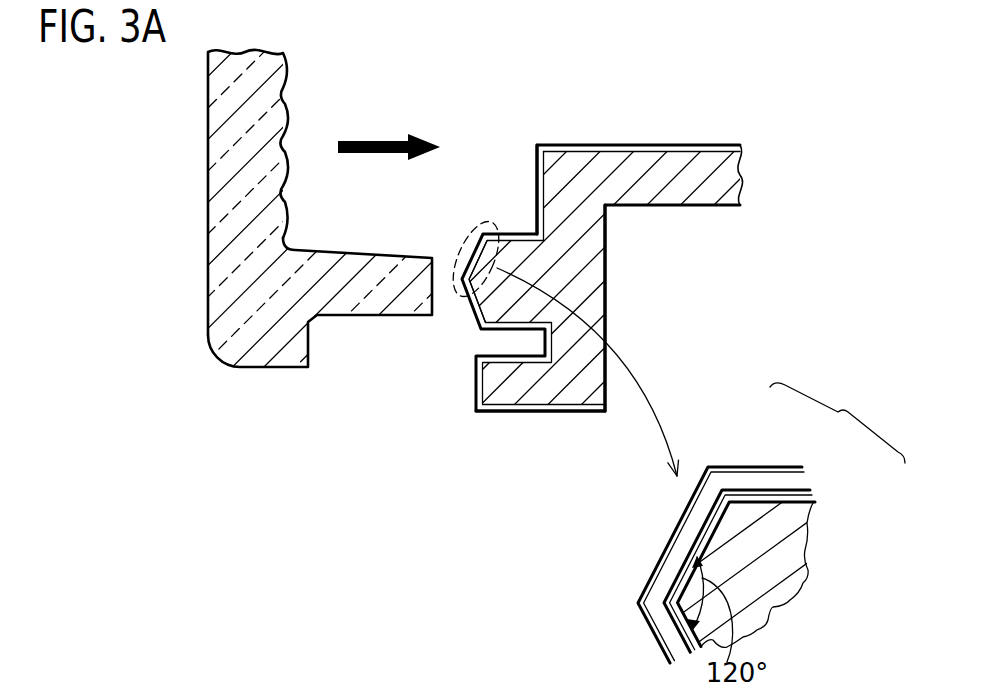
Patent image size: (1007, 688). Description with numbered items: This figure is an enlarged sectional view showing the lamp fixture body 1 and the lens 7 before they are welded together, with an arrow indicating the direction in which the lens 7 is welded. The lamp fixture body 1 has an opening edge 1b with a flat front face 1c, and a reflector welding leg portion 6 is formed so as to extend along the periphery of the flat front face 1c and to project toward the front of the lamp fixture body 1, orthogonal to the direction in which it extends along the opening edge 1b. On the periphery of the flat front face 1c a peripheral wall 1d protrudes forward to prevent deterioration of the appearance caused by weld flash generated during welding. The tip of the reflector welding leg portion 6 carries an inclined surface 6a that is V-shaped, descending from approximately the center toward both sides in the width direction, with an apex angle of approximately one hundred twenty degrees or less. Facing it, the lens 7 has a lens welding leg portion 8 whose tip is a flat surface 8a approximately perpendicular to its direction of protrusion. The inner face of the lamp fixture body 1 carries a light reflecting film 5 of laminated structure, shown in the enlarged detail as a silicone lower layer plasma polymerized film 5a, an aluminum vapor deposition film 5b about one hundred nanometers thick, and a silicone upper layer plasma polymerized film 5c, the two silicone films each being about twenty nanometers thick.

The lamp fixture body 1 is at (707, 193).
The opening edge 1b is at (608, 277).
The flat front face 1c is at (537, 197).
The peripheral wall 1d is at (542, 387).
The light reflecting film 5 is at (617, 145).
The silicone lower layer plasma polymerized film 5a is at (802, 497).
The aluminum vapor deposition film 5b is at (775, 484).
The silicone upper layer plasma polymerized film 5c is at (727, 466).
The reflector welding leg portion 6 is at (508, 403).
The inclined surface 6a is at (473, 313).
The lens 7 is at (218, 213).
The lens welding leg portion 8 is at (361, 287).
The flat surface 8a is at (440, 272).